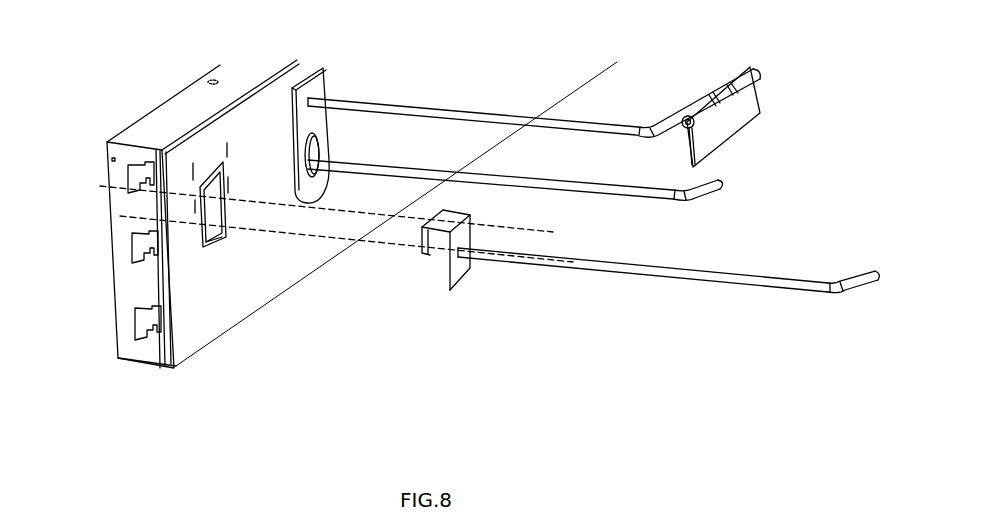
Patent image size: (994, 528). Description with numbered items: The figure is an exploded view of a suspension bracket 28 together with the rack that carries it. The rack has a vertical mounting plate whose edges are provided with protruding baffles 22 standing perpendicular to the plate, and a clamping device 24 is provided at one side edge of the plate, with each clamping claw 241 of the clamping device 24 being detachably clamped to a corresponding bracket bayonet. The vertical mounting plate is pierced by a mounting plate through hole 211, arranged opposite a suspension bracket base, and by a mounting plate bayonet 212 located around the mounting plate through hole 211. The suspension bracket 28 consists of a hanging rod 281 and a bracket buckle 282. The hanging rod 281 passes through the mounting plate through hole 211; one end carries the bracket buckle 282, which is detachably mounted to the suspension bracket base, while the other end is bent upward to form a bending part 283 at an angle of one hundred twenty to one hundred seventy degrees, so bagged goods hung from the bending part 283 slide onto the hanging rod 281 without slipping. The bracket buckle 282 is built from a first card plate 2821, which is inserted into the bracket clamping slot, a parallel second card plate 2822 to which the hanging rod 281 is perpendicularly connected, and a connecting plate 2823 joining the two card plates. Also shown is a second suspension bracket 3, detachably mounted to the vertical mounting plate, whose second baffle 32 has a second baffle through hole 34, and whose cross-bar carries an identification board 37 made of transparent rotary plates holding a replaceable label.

The baffle 22 is at (123, 292).
The clamping device 24 is at (162, 352).
The clamping claw 241 is at (142, 333).
The mounting plate through hole 211 is at (208, 177).
The mounting plate bayonet 212 is at (227, 148).
The second suspension bracket 3 is at (514, 135).
The second baffle 32 is at (296, 110).
The second baffle through hole 34 is at (312, 145).
The identification board 37 is at (732, 123).
The suspension bracket 28 is at (593, 188).
The hanging rod 281 is at (692, 273).
The bracket buckle 282 is at (507, 297).
The first card plate 2821 is at (428, 235).
The second card plate 2822 is at (458, 273).
The connecting plate 2823 is at (435, 225).
The bending part 283 is at (855, 282).